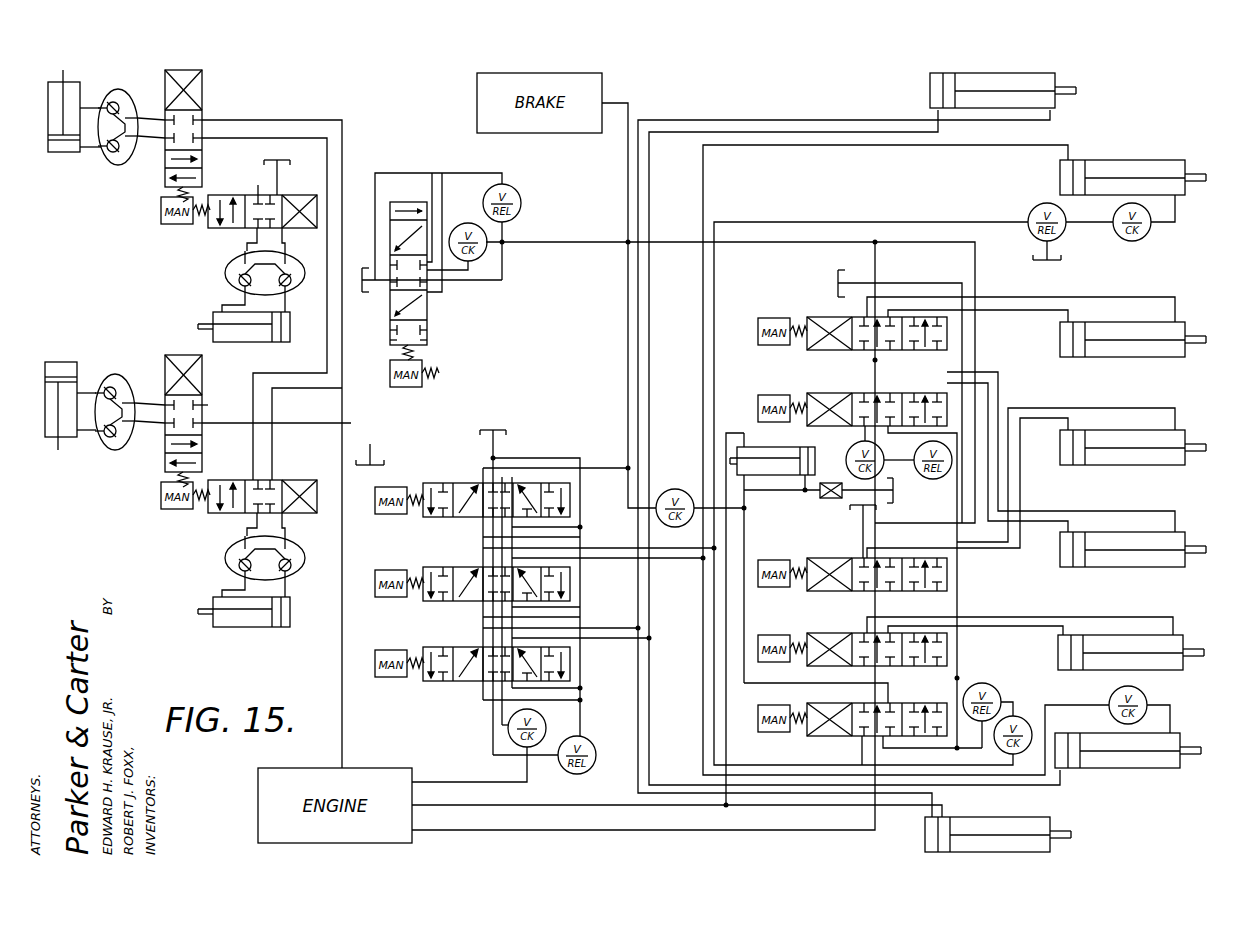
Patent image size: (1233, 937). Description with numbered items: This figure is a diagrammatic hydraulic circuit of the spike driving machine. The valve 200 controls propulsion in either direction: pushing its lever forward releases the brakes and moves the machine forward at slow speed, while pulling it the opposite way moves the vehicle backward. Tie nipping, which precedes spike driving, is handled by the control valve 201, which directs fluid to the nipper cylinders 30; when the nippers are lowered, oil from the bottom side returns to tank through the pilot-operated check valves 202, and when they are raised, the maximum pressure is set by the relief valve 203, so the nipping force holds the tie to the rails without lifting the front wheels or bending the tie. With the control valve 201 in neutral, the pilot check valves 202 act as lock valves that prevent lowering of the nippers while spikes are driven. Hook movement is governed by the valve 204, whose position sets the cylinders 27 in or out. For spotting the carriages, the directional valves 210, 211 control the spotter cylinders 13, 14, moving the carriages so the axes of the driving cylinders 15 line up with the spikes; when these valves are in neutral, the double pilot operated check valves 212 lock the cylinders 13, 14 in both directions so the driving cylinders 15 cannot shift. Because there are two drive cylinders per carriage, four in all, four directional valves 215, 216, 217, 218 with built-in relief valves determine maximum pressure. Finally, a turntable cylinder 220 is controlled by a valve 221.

The spotter cylinder 13 is at (213, 318).
The spotter cylinder 14 is at (62, 152).
The driving cylinder 15 is at (1140, 357).
The hook cylinder 27 is at (930, 100).
The nipper cylinder 30 is at (1125, 160).
The propulsion valve 200 is at (432, 310).
The nipper control valve 201 is at (435, 602).
The pilot-operated check valve 202 is at (1148, 236).
The relief valve 203 is at (1032, 210).
The hook valve 204 is at (440, 680).
The directional valve 210 is at (158, 512).
The directional valve 211 is at (158, 225).
The double pilot operated check valve 212 is at (128, 83).
The directional valve 215 is at (812, 317).
The directional valve 216 is at (812, 393).
The directional valve 217 is at (822, 558).
The directional valve 218 is at (812, 633).
The turntable cylinder 220 is at (737, 450).
The turntable valve 221 is at (815, 737).